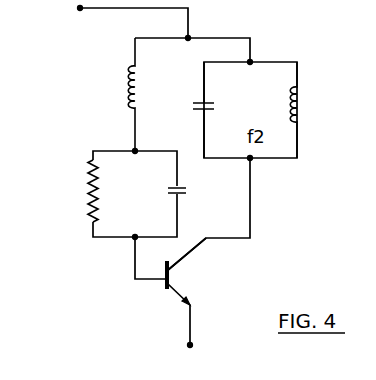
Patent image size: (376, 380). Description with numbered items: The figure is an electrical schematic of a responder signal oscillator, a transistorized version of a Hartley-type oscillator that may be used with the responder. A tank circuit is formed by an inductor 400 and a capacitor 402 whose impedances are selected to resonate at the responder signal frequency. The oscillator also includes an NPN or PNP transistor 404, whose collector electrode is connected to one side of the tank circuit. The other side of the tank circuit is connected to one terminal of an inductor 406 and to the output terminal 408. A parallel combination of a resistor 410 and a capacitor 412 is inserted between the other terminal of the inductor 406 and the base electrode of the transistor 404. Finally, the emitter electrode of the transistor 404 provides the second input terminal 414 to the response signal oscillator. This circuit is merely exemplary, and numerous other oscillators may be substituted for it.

The inductor 400 is at (298, 102).
The capacitor 402 is at (214, 86).
The transistor 404 is at (170, 278).
The inductor 406 is at (133, 101).
The output terminal 408 is at (161, 9).
The resistor 410 is at (90, 210).
The capacitor 412 is at (180, 186).
The second input terminal 414 is at (192, 322).